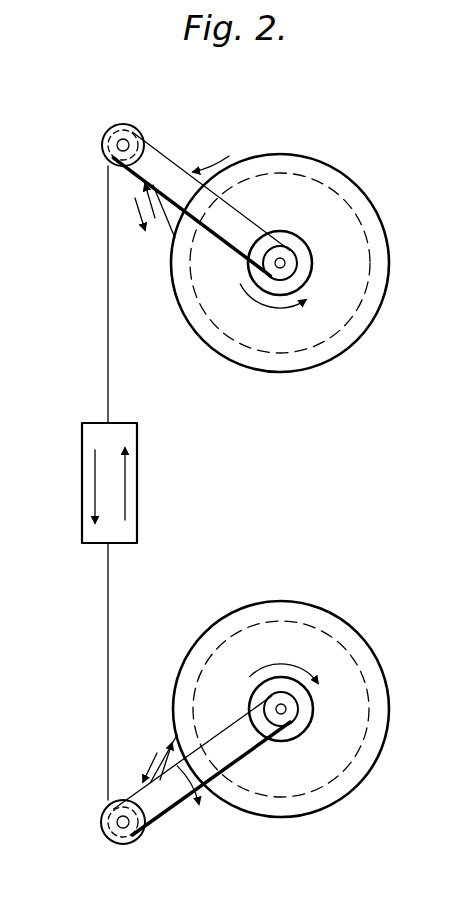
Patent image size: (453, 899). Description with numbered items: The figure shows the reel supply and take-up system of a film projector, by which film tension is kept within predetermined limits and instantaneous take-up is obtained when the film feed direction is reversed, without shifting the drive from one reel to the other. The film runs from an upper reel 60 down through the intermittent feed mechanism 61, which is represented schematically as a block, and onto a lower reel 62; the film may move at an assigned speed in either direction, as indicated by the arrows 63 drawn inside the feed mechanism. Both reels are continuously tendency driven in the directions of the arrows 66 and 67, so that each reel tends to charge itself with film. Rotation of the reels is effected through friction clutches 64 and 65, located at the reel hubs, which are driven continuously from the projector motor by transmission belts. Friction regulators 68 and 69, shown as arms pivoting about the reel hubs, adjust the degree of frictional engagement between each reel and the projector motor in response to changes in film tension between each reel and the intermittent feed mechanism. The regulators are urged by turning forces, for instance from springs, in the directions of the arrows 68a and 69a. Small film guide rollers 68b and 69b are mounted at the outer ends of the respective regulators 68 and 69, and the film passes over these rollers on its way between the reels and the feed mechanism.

The upper reel 60 is at (323, 170).
The intermittent feed mechanism 61 is at (88, 423).
The lower reel 62 is at (320, 612).
The arrows 63 is at (108, 480).
The friction clutch 64 is at (307, 248).
The friction clutch 65 is at (313, 707).
The arrow 66 is at (278, 308).
The arrow 67 is at (287, 667).
The friction regulator 68 is at (162, 172).
The arrow 68a is at (229, 156).
The film guide roller 68b is at (102, 147).
The friction regulator 69 is at (160, 814).
The arrow 69a is at (216, 799).
The film guide roller 69b is at (115, 835).